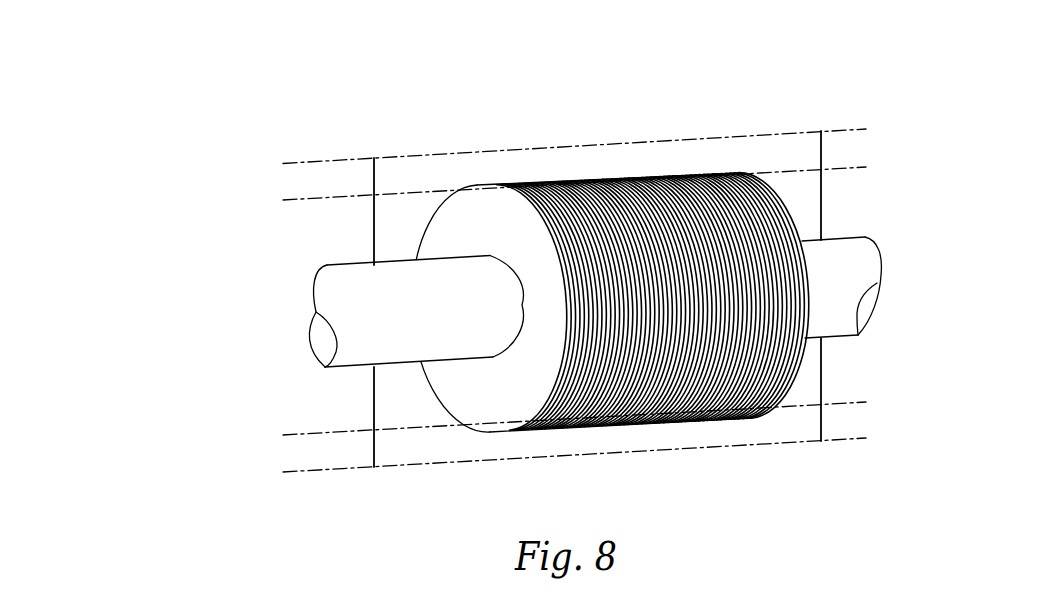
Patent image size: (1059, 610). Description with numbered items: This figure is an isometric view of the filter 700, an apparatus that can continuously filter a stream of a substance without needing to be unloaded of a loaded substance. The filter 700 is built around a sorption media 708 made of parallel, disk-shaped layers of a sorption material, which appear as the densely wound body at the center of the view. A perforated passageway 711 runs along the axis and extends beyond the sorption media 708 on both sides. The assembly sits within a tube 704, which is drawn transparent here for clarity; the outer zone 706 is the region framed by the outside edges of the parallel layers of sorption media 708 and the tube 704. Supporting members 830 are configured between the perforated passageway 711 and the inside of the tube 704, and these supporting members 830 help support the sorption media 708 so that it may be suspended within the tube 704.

The filter 700 is at (412, 74).
The tube 704 is at (714, 136).
The outer zone 706 is at (562, 160).
The sorption media 708 is at (704, 375).
The perforated passageway 711 is at (353, 275).
The supporting members 830 is at (375, 182).